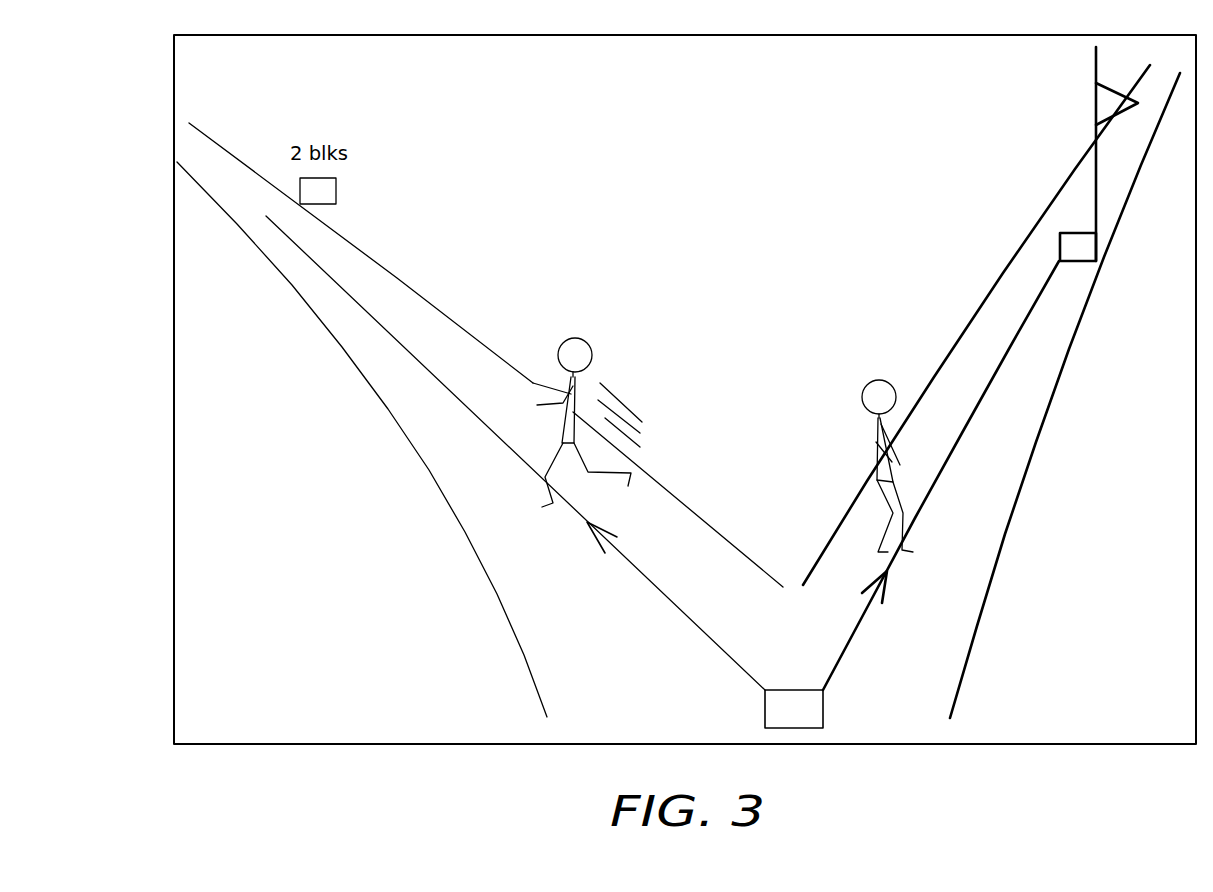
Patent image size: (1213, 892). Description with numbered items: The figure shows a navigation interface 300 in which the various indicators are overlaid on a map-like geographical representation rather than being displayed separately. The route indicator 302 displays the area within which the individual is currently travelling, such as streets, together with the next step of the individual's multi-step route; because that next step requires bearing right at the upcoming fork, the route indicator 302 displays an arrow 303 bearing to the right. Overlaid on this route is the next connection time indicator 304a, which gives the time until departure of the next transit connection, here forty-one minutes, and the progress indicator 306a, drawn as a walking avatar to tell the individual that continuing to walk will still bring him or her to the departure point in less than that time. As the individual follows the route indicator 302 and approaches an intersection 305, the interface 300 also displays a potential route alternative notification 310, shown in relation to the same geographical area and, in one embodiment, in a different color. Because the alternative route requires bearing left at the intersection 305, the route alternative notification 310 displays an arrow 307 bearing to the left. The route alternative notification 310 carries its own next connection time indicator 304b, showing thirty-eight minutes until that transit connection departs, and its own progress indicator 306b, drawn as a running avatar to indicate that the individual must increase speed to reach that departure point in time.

The navigation interface 300 is at (172, 49).
The route indicator 302 is at (1030, 315).
The arrow 303 is at (876, 581).
The next connection time indicator 304a is at (907, 348).
The next connection time indicator 304b is at (581, 299).
The intersection 305 is at (765, 713).
The progress indicator 306a is at (861, 397).
The progress indicator 306b is at (594, 350).
The arrow 307 is at (611, 533).
The potential route alternative notification 310 is at (360, 303).